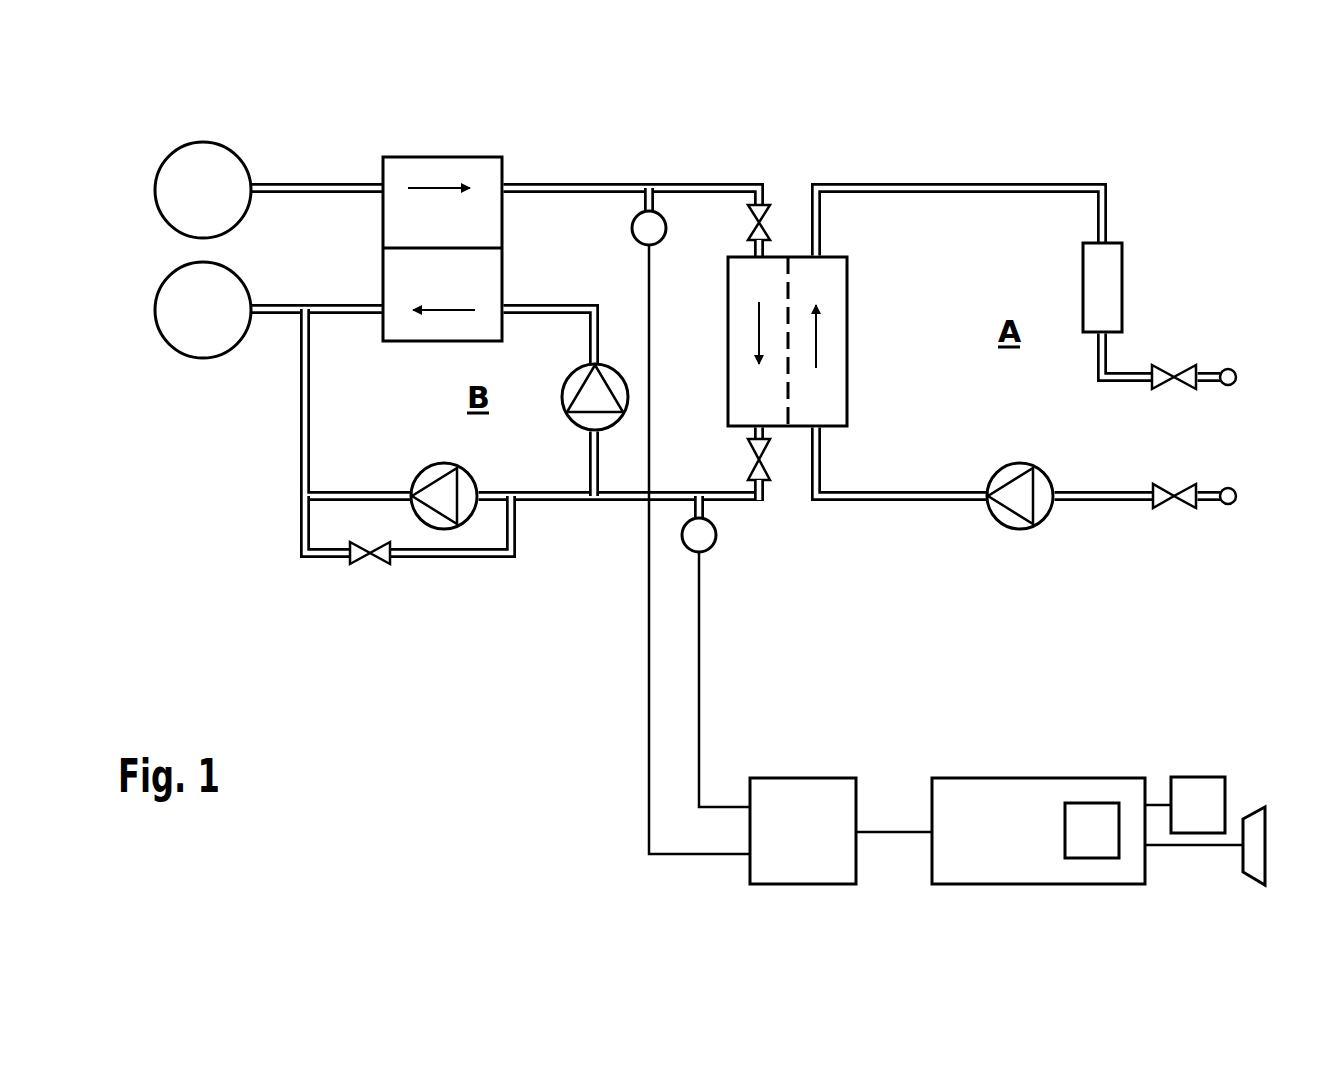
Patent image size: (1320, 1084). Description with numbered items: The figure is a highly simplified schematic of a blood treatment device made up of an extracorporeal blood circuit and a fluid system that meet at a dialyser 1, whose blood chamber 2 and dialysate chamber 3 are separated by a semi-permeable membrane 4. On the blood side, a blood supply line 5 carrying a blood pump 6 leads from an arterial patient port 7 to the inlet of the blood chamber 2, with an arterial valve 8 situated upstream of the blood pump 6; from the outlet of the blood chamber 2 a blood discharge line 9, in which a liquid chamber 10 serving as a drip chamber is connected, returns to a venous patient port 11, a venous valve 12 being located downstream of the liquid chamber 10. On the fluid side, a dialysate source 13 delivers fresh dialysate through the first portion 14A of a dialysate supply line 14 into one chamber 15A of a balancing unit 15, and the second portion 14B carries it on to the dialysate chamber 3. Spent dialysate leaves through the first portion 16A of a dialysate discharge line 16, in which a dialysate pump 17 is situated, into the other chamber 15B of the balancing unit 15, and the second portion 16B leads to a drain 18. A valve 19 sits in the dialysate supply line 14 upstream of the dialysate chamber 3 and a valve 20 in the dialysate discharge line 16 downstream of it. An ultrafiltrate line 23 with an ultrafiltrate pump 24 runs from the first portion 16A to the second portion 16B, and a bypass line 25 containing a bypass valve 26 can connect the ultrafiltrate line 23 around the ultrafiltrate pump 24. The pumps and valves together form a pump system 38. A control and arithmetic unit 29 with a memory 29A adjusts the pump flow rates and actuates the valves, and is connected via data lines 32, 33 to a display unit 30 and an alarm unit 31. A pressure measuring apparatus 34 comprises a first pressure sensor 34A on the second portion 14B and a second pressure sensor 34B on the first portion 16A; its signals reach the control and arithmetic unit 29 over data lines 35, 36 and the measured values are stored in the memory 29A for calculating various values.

The dialyser 1 is at (850, 339).
The blood chamber 2 is at (838, 393).
The dialysate chamber 3 is at (740, 390).
The semi-permeable membrane 4 is at (790, 270).
The blood supply line 5 is at (1076, 503).
The blood pump 6 is at (1005, 465).
The arterial patient port 7 is at (1232, 487).
The arterial valve 8 is at (1182, 484).
The blood discharge line 9 is at (1041, 183).
The liquid chamber 10 is at (1083, 272).
The venous patient port 11 is at (1235, 370).
The venous valve 12 is at (1178, 367).
The dialysate source 13 is at (204, 142).
The dialysate supply line 14 is at (522, 183).
The first portion of the dialysate supply line 14A is at (315, 183).
The second portion of the dialysate supply line 14B is at (651, 183).
The balancing unit 15 is at (433, 157).
The chamber of the balancing unit 15A is at (490, 220).
The other chamber of the balancing unit 15B is at (490, 284).
The dialysate discharge line 16 is at (600, 330).
The first portion of the dialysate discharge line 16A is at (752, 503).
The second portion of the dialysate discharge line 16B is at (317, 305).
The dialysate pump 17 is at (582, 420).
The drain 18 is at (190, 358).
The valve 19 is at (761, 205).
The valve 20 is at (762, 458).
The ultrafiltrate line 23 is at (342, 492).
The ultrafiltrate pump 24 is at (444, 470).
The bypass line 25 is at (437, 560).
The bypass valve 26 is at (352, 562).
The control and arithmetic unit 29 is at (1036, 778).
The memory 29A is at (1065, 833).
The display unit 30 is at (1205, 777).
The alarm unit 31 is at (1248, 815).
The data line 32 is at (1158, 800).
The data line 33 is at (1183, 847).
The pressure measuring apparatus 34 is at (794, 778).
The first pressure sensor 34A is at (666, 226).
The second pressure sensor 34B is at (700, 555).
The data line 35 is at (700, 650).
The data line 36 is at (648, 650).
The pump system 38 is at (710, 218).